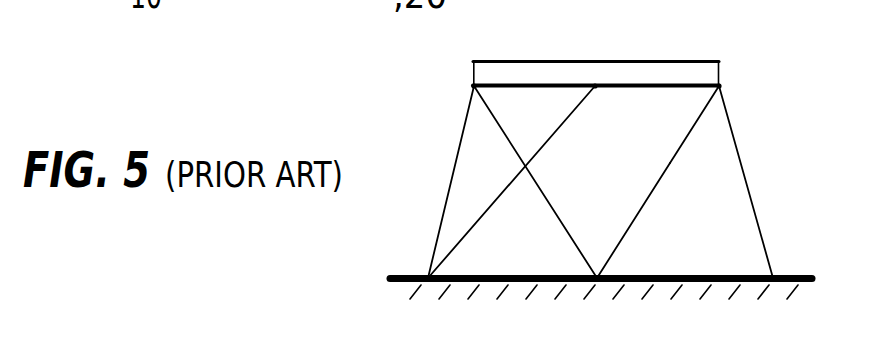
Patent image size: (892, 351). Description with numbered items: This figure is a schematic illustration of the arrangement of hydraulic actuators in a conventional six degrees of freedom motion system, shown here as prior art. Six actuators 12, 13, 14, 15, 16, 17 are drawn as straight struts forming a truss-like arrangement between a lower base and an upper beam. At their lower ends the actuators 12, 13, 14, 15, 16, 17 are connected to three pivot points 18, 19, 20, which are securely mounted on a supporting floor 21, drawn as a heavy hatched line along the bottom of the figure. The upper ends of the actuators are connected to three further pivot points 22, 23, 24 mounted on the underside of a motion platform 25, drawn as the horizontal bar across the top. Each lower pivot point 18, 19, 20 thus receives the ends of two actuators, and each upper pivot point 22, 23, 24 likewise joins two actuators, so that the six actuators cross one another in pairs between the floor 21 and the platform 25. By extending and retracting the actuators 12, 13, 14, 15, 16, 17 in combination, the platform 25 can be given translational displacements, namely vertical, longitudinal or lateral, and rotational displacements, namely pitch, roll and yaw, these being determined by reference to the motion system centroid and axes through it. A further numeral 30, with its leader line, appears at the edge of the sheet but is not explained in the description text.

The actuator 12 is at (454, 165).
The actuator 13 is at (473, 220).
The actuator 14 is at (621, 238).
The actuator 15 is at (764, 240).
The actuator 16 is at (692, 130).
The actuator 17 is at (547, 192).
The pivot point 18 is at (598, 279).
The pivot point 19 is at (773, 278).
The pivot point 20 is at (428, 277).
The supporting floor 21 is at (406, 272).
The pivot point 22 is at (473, 86).
The pivot point 23 is at (596, 89).
The pivot point 24 is at (722, 87).
The motion platform 25 is at (570, 78).
The member (adjacent figure) 30 is at (266, 350).